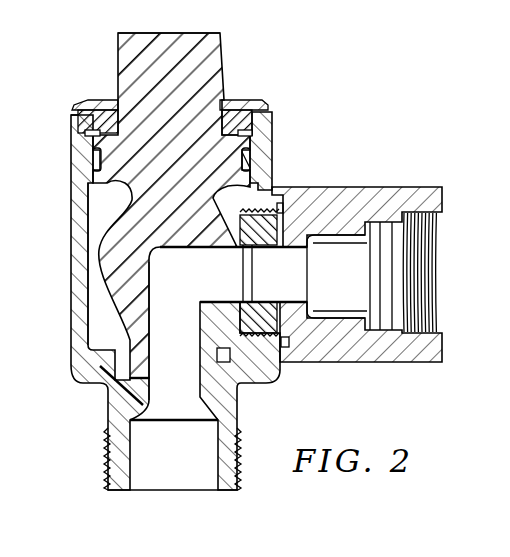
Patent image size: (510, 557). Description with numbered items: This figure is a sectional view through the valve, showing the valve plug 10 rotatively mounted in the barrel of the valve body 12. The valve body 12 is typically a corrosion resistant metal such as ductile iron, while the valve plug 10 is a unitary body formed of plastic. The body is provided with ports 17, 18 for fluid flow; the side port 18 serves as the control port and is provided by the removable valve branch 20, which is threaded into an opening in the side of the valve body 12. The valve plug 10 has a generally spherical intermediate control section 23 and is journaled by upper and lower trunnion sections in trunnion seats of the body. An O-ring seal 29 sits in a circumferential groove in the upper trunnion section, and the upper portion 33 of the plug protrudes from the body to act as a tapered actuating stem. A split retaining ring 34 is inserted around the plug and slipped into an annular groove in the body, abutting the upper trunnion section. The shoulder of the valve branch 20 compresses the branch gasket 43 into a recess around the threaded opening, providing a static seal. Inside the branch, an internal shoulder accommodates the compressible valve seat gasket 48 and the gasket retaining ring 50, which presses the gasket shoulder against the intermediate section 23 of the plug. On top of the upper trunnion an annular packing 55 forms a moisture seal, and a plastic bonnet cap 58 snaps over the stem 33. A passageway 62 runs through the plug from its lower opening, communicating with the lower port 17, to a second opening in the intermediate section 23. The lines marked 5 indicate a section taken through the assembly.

The valve plug 10 is at (229, 46).
The valve body 12 is at (72, 193).
The lower valve port 17 is at (184, 416).
The side port 18 is at (276, 294).
The valve branch 20 is at (373, 362).
The intermediate control section 23 is at (73, 238).
The O-ring seal 29 is at (250, 156).
The upper portion of the plug 33 is at (118, 50).
The split retaining ring 34 is at (71, 118).
The branch gasket 43 is at (280, 203).
The valve seat gasket 48 is at (240, 252).
The gasket retaining ring 50 is at (260, 303).
The annular packing 55 is at (244, 100).
The bonnet cap 58 is at (108, 100).
The passageway 62 is at (190, 300).
The section line 5 is at (40, 277).